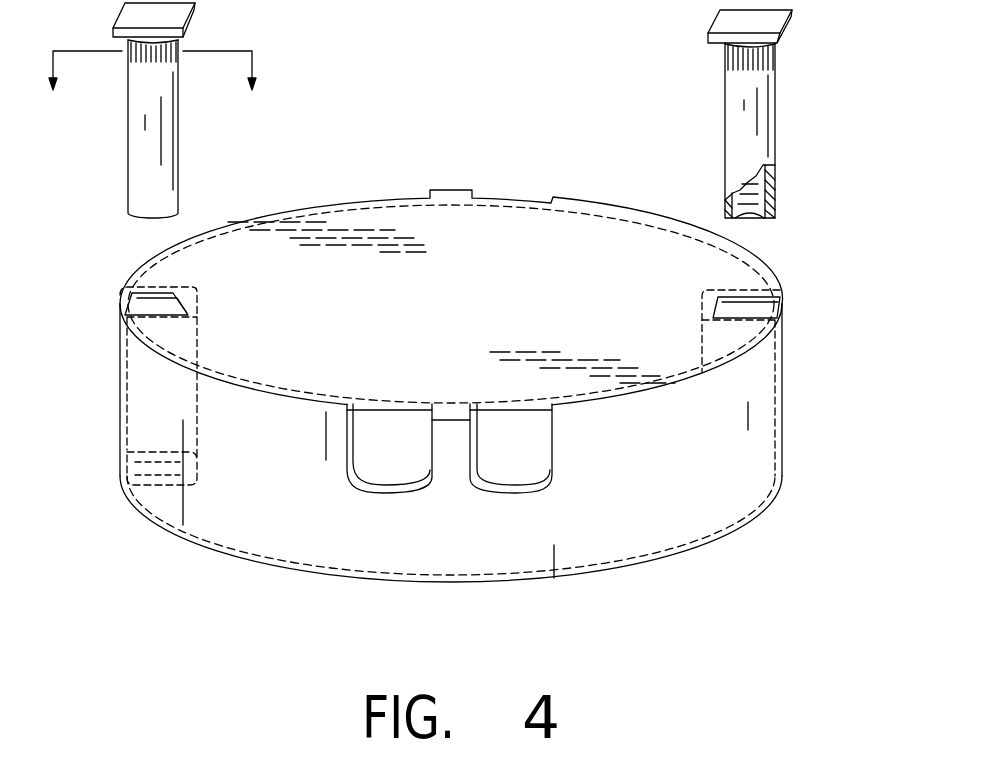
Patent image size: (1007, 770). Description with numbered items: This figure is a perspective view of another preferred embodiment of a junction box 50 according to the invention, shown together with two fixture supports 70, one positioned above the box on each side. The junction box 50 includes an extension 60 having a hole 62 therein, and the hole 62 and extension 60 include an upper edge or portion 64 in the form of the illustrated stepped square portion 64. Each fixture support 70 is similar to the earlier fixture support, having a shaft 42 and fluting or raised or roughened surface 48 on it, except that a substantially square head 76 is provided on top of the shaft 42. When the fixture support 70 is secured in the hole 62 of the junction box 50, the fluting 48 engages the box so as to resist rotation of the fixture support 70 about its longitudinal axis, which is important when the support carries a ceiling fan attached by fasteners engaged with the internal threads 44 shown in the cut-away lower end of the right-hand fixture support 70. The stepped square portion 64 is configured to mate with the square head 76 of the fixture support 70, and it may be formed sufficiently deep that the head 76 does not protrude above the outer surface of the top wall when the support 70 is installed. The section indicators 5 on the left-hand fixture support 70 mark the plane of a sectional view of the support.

The section line 5- 5 is at (151, 90).
The shaft 42 is at (732, 137).
The internal threads 44 is at (757, 218).
The fluting 48 is at (723, 57).
The junction box 50 is at (806, 400).
The extension 60 is at (712, 296).
The hole 62 is at (135, 304).
The stepped square portion 64 is at (780, 297).
The fixture support 70 is at (507, 127).
The square head 76 is at (790, 13).